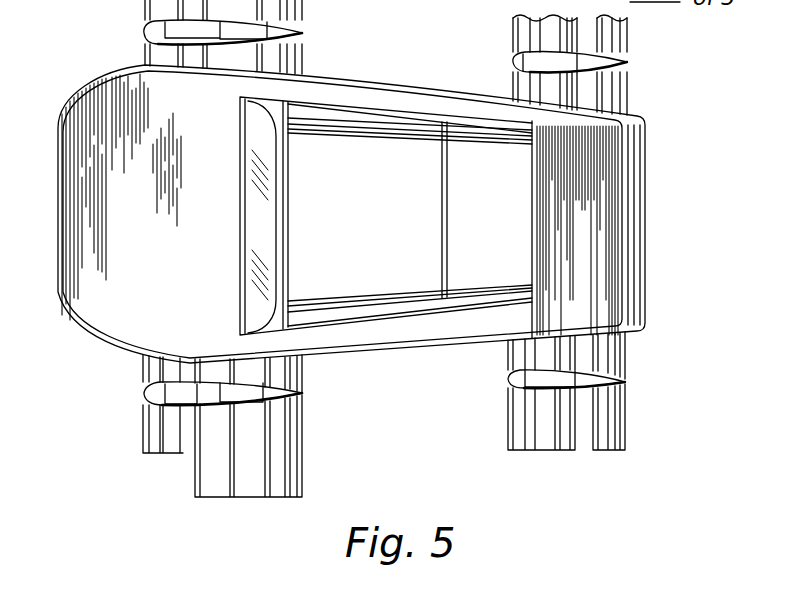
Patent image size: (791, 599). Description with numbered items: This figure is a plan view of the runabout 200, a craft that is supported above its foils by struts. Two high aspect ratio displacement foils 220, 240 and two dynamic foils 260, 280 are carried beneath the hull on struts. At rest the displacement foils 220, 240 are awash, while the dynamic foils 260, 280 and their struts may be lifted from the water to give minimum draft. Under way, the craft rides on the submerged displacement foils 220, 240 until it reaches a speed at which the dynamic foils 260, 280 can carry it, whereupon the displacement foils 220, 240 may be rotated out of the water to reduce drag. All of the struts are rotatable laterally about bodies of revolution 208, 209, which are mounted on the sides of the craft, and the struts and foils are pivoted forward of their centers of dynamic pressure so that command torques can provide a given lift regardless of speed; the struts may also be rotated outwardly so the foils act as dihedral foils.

The runabout 200 is at (404, 384).
The body of revolution 208 is at (202, 397).
The body of revolution 209 is at (593, 388).
The high aspect ratio displacement foil 220 is at (288, 422).
The high aspect ratio displacement foil 240 is at (517, 417).
The dynamic foil 260 is at (160, 423).
The dynamic foil 280 is at (615, 435).